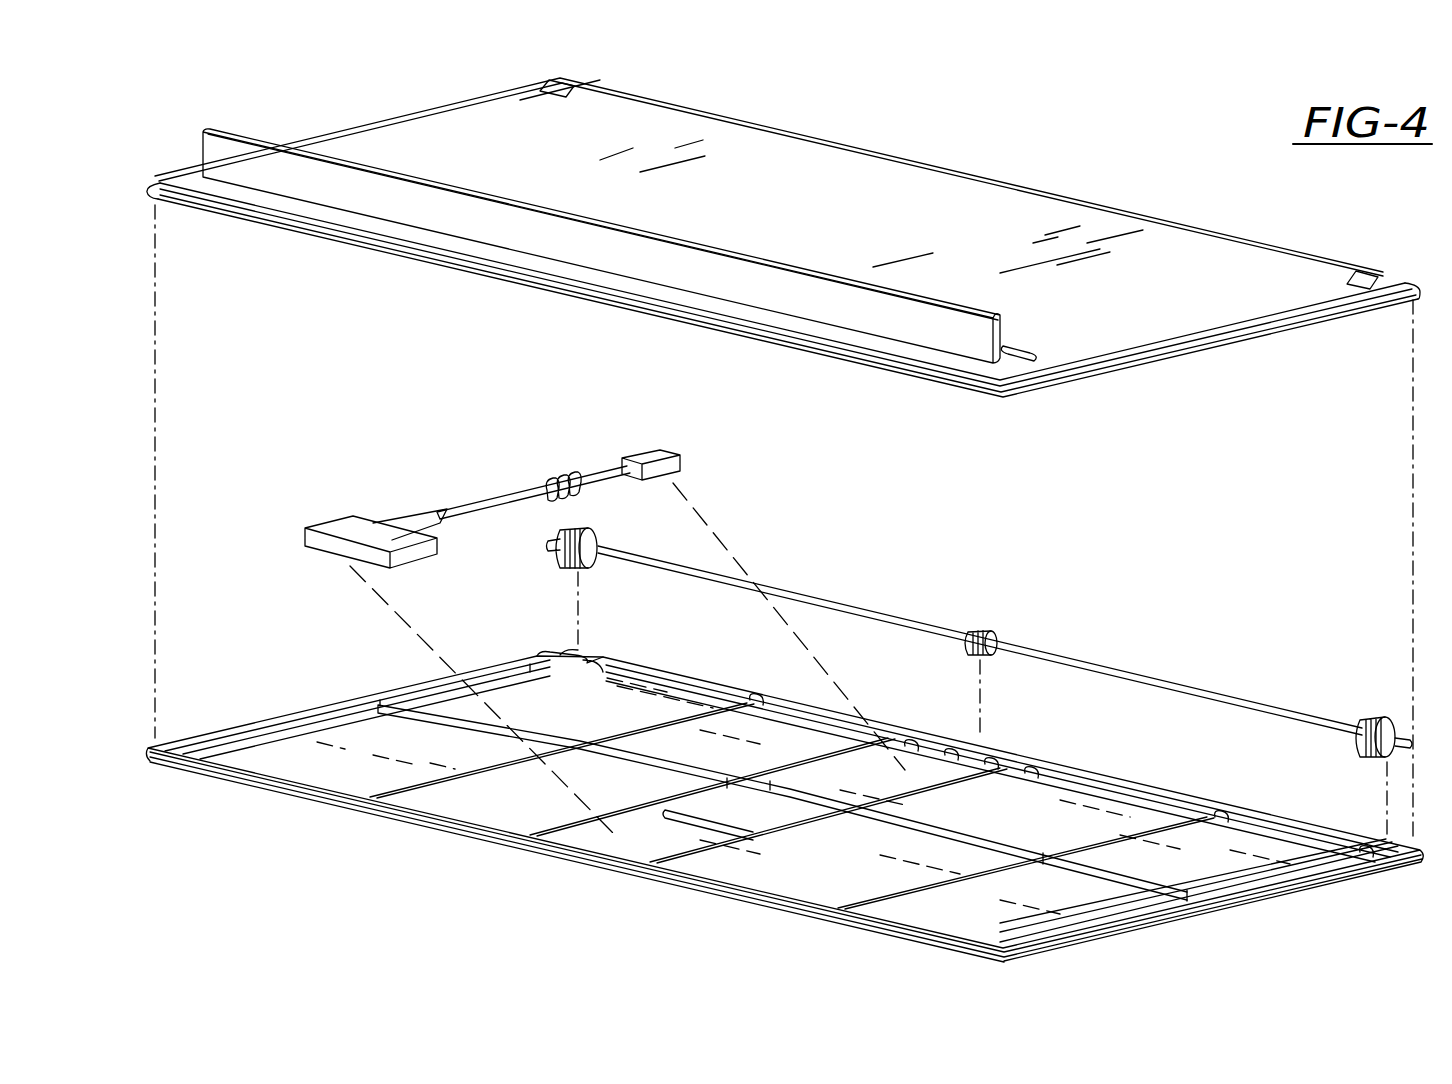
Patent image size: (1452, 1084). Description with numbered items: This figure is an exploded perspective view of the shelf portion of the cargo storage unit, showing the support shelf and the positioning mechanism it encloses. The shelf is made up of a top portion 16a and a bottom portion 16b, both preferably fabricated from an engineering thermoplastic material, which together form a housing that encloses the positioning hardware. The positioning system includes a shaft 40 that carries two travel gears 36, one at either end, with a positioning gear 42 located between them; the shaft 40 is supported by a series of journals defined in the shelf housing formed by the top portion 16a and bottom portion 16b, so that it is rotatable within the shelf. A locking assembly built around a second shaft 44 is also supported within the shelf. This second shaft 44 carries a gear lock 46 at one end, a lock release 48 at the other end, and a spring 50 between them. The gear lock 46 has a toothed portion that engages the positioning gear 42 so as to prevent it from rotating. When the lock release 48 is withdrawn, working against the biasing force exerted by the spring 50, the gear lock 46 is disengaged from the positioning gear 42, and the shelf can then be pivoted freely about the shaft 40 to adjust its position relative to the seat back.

The top portion 16a is at (930, 192).
The bottom portion 16b is at (667, 878).
The travel gear 36 is at (1368, 718).
The shaft 40 is at (905, 618).
The positioning gear 42 is at (993, 632).
The second shaft 44 is at (470, 505).
The gear lock 46 is at (645, 455).
The lock release 48 is at (340, 528).
The spring 50 is at (555, 478).